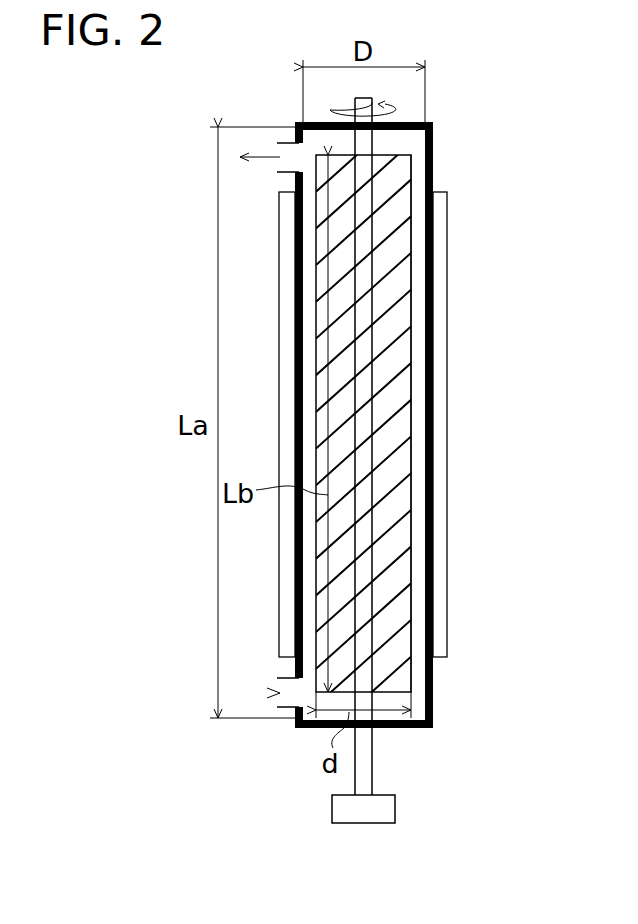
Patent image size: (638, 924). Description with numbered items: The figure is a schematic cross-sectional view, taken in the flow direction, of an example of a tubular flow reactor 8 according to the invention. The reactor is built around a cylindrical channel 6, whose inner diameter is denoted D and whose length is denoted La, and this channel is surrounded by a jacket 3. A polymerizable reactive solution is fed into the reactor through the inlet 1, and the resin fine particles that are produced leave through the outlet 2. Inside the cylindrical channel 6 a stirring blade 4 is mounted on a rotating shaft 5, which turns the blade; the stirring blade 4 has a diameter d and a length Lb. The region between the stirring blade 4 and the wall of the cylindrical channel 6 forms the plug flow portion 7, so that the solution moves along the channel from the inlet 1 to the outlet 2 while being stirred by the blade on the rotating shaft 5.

The inlet 1 is at (277, 678).
The outlet 2 is at (277, 143).
The jacket 3 is at (447, 458).
The stirring blade 4 is at (400, 563).
The rotating shaft 5 is at (372, 760).
The cylindrical channel 6 is at (433, 256).
The plug flow portion 7 is at (412, 345).
The tubular flow reactor 8 is at (367, 417).